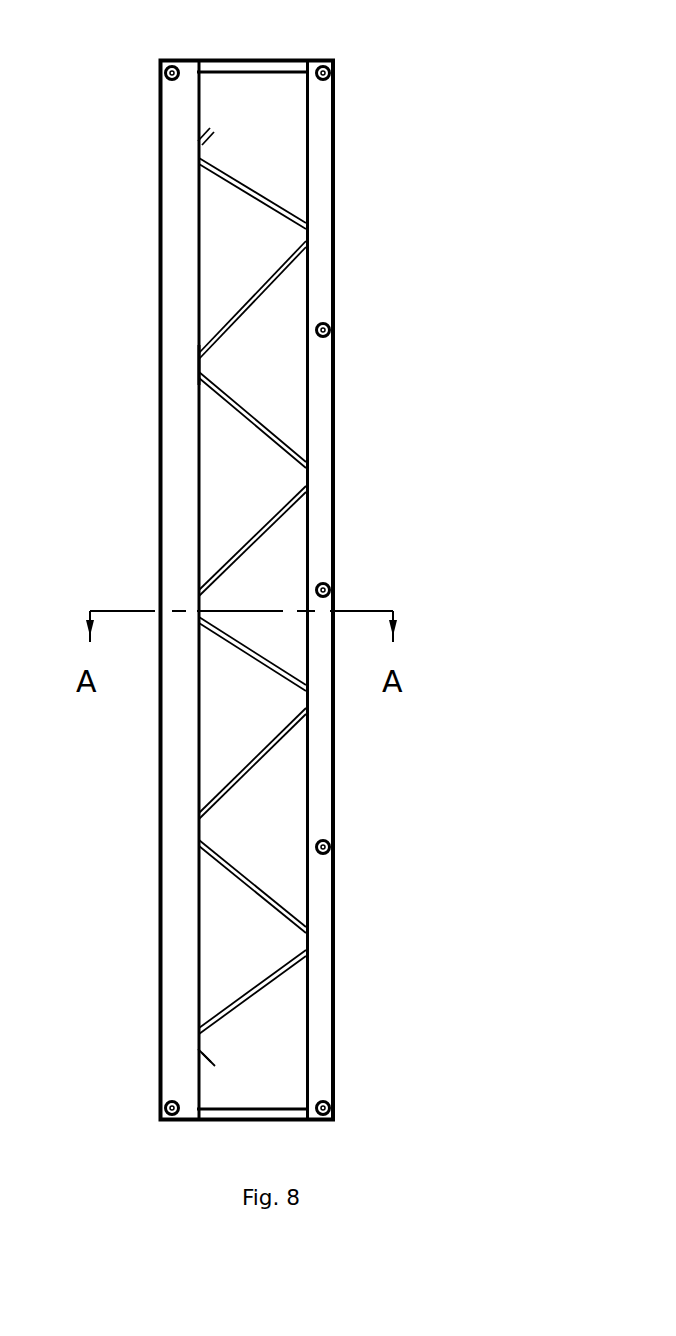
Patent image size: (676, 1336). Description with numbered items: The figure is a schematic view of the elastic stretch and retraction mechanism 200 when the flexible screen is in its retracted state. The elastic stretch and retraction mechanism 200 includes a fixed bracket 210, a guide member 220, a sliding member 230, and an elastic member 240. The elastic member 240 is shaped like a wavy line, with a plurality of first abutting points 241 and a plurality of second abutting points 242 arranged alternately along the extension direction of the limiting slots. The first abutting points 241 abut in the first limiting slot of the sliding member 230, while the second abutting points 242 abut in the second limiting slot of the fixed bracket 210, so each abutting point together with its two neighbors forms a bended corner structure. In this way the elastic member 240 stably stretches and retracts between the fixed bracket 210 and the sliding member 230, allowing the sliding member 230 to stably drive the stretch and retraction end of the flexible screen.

The elastic stretch and retraction mechanism 200 is at (527, 88).
The fixed bracket 210 is at (317, 527).
The guide member 220 is at (273, 1112).
The sliding member 230 is at (183, 927).
The elastic member 240 is at (247, 187).
The first abutting points 241 is at (198, 370).
The second abutting points 242 is at (302, 240).